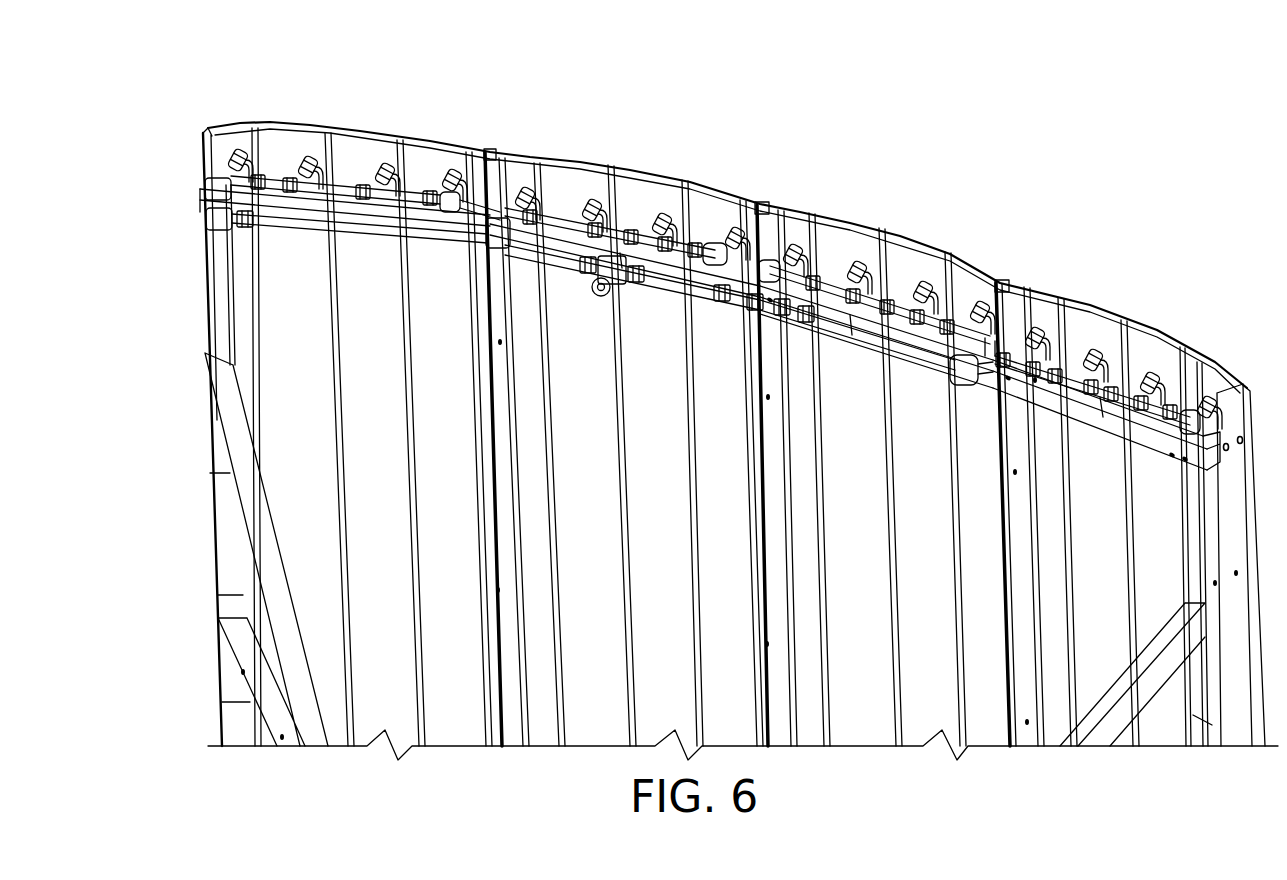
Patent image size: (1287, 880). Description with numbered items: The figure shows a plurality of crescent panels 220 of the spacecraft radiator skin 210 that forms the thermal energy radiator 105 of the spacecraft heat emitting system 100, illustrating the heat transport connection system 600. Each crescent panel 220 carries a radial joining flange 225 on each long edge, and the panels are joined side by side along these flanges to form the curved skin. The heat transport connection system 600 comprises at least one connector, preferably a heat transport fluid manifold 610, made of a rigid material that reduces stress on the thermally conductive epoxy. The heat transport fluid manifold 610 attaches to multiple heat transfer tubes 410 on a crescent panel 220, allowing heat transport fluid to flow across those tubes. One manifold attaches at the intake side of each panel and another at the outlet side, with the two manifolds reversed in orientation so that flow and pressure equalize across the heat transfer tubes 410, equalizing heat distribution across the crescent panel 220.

The spacecraft heat emitting system 100 is at (1143, 127).
The thermal energy radiator 105 is at (148, 125).
The spacecraft radiator skin 210 is at (883, 165).
The crescent panel 220 is at (672, 175).
The radial joining flange 225 is at (1010, 282).
The heat transfer tube 410 is at (607, 185).
The heat transport connection system 600 is at (200, 123).
The heat transport fluid manifold 610 is at (325, 160).